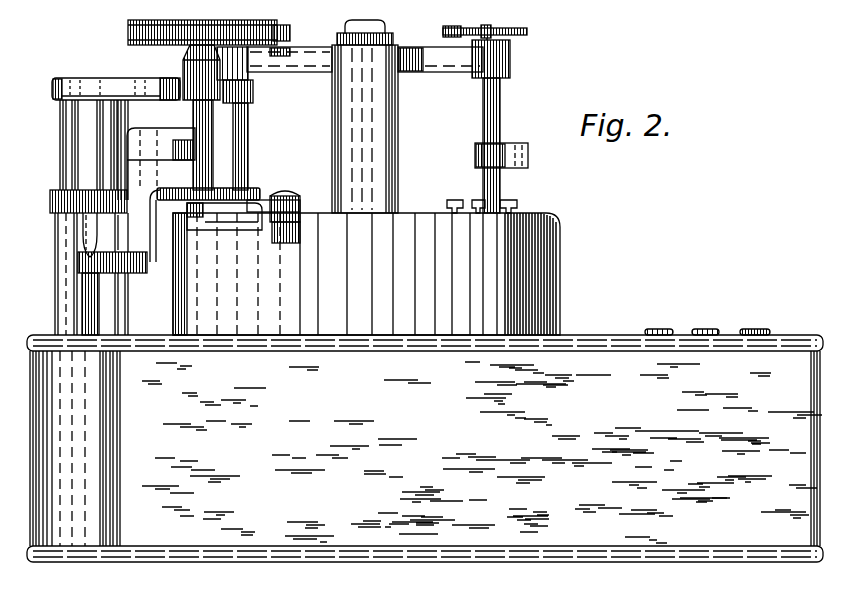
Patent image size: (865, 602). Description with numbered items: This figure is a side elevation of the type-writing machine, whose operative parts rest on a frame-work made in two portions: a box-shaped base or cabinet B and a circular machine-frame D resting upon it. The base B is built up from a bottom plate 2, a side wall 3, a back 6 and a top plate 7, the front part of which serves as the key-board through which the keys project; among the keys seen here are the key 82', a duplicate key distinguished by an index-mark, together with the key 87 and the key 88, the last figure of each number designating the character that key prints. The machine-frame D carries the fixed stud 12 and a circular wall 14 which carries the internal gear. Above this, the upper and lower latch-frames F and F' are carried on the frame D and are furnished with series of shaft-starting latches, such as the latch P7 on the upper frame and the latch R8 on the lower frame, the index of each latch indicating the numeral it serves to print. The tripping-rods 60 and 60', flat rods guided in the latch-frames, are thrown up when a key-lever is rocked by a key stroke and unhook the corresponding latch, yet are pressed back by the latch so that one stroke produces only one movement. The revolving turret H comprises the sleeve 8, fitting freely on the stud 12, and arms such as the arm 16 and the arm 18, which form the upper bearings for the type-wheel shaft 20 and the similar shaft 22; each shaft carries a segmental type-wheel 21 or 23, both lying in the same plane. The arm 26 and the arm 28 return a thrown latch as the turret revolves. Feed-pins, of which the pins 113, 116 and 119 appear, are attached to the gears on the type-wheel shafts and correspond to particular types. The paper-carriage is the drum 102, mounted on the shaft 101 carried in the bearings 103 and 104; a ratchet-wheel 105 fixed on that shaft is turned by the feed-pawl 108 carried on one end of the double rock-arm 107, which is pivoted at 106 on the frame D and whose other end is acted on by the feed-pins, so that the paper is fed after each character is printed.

The bottom plate 2 is at (400, 560).
The side wall 3 is at (248, 522).
The back 6 is at (53, 463).
The top plate 7 is at (557, 342).
The sleeve 8 is at (398, 172).
The fixed stud 12 is at (376, 3).
The circular wall 14 is at (552, 258).
The arm 16 is at (307, 55).
The arm 18 is at (413, 45).
The type-wheel shaft 20 is at (248, 123).
The segmental type-wheel 21 is at (289, 28).
The type-wheel shaft 22 is at (500, 190).
The segmental type-wheel 23 is at (507, 32).
The arm 26 is at (253, 97).
The arm 28 is at (508, 147).
The tripping-rod 60 is at (75, 262).
The tripping-rod 60' is at (118, 274).
The key 82' is at (647, 317).
The key 87 is at (749, 329).
The key 88 is at (704, 329).
The shaft 101 is at (213, 152).
The drum 102 is at (168, 24).
The bearing 103 is at (184, 67).
The bearing 104 is at (223, 222).
The ratchet-wheel 105 is at (181, 193).
The pivot 106 is at (284, 191).
The double rock-arm 107 is at (274, 243).
The feed-pawl 108 is at (241, 192).
The feed-pin 113 is at (448, 201).
The feed-pin 116 is at (475, 201).
The feed-pin 119 is at (517, 203).
The base or cabinet B is at (482, 452).
The machine-frame D is at (366, 274).
The upper latch-frame F is at (75, 150).
The lower latch-frame F' is at (119, 268).
The turret H is at (388, 132).
The shaft-starting latch P7 is at (120, 85).
The shaft-starting latch R8 is at (177, 160).